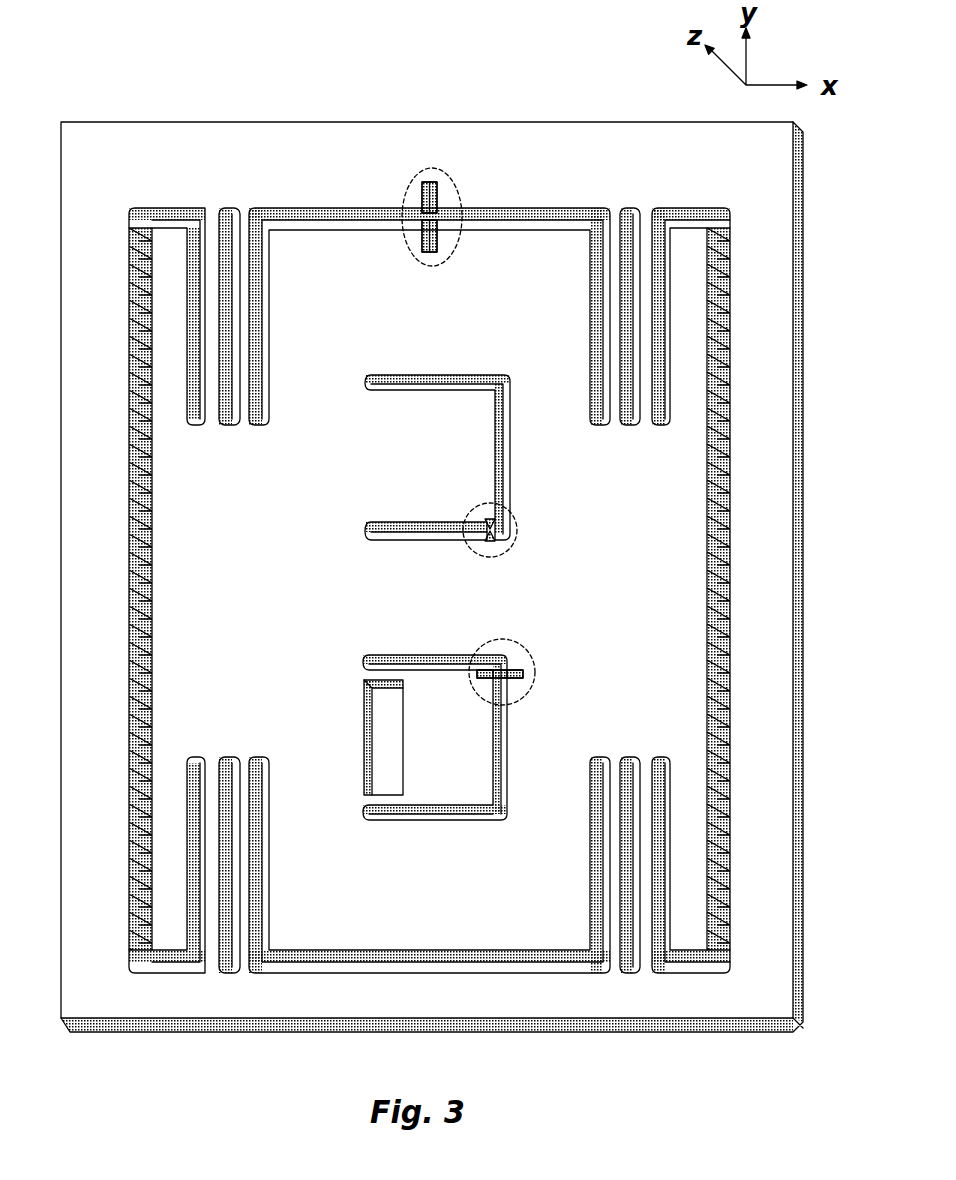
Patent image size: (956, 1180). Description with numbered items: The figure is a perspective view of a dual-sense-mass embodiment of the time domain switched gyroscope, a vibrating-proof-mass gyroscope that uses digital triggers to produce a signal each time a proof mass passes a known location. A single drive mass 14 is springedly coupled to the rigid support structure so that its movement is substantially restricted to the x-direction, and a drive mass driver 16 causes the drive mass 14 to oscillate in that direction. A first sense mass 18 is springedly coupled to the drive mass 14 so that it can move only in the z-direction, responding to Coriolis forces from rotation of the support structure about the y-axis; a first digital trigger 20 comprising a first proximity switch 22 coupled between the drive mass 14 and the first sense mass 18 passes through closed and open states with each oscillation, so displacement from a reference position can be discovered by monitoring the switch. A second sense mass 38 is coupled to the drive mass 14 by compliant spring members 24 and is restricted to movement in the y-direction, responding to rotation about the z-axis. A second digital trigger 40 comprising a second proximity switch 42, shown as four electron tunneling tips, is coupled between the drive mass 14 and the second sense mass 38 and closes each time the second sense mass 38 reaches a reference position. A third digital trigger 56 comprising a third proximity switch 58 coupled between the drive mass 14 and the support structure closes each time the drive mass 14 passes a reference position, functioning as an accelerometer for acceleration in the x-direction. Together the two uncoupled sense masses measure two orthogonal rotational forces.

The drive mass 14 is at (287, 608).
The drive mass driver 16 is at (152, 498).
The first sense mass 18 is at (392, 424).
The first digital trigger 20 is at (510, 541).
The first proximity switch 22 is at (510, 541).
The compliant spring members 24 is at (376, 795).
The second sense mass 38 is at (482, 749).
The second digital trigger 40 is at (530, 668).
The second proximity switch 42 is at (530, 668).
The third digital trigger 56 is at (412, 229).
The third proximity switch 58 is at (412, 229).